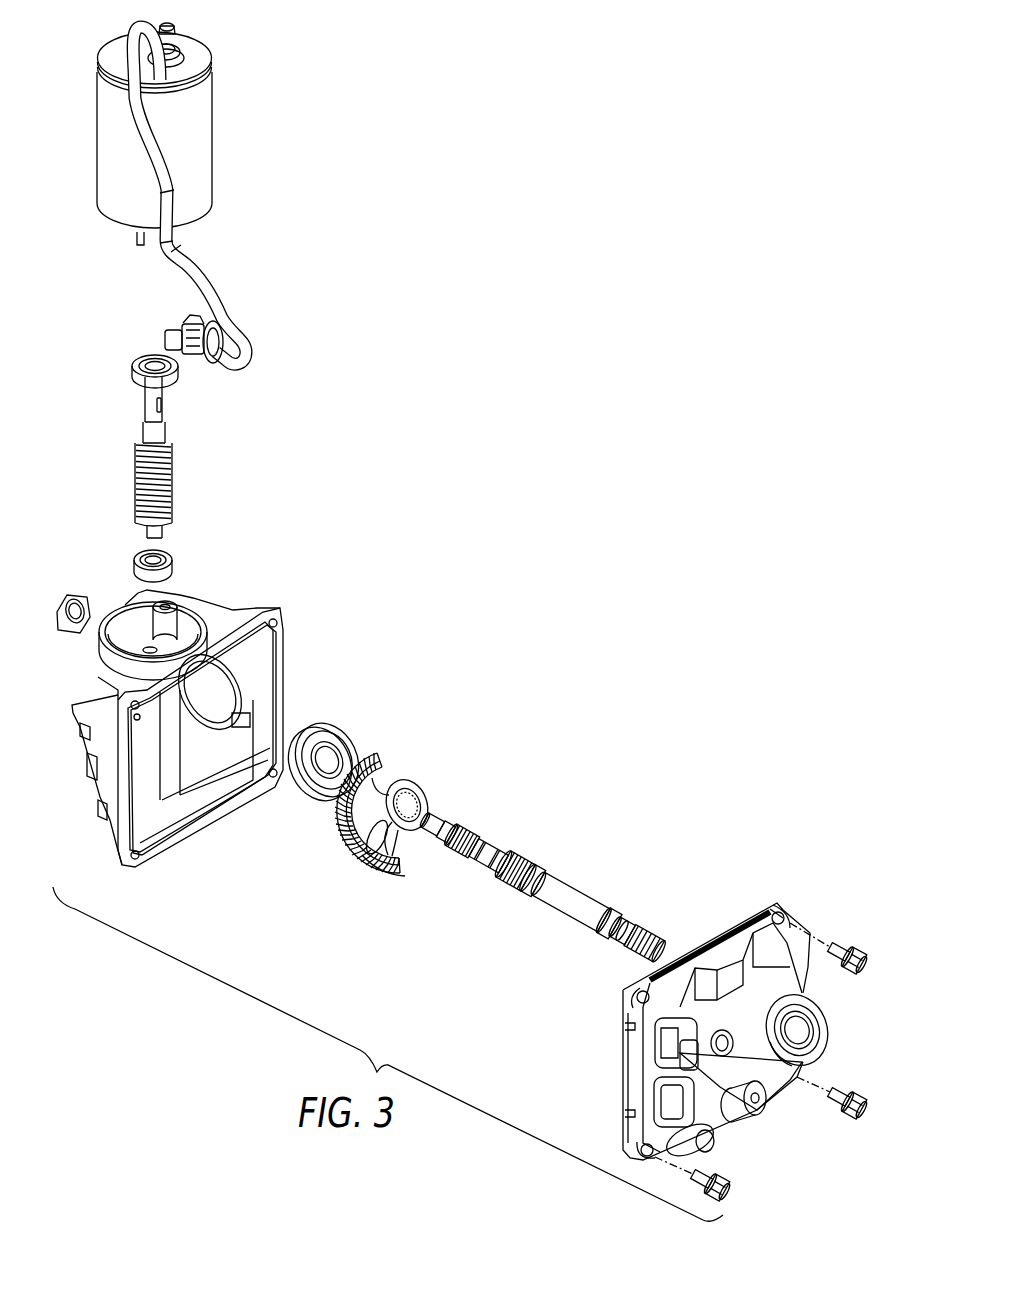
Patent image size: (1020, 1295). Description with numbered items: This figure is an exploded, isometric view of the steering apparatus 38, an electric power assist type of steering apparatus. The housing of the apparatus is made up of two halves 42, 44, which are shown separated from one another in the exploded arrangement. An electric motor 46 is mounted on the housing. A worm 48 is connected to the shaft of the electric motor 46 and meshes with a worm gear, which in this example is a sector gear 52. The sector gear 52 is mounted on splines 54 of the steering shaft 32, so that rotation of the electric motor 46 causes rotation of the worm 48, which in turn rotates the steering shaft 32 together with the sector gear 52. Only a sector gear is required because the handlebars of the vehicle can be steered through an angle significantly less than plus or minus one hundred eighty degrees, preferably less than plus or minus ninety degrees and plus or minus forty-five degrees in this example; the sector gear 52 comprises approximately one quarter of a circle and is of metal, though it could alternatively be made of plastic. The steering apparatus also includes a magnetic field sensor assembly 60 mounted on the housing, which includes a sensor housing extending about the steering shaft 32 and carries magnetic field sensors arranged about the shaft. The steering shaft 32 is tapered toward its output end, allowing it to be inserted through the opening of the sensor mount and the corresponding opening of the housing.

The electric motor 46 is at (187, 147).
The worm 48 is at (174, 483).
The housing half 42 is at (285, 612).
The sector gear 52 is at (373, 752).
The steering apparatus 38 is at (516, 722).
The splines 54 is at (523, 853).
The steering shaft 32 is at (553, 887).
The housing half 44 is at (752, 932).
The magnetic field sensor assembly 60 is at (823, 1003).